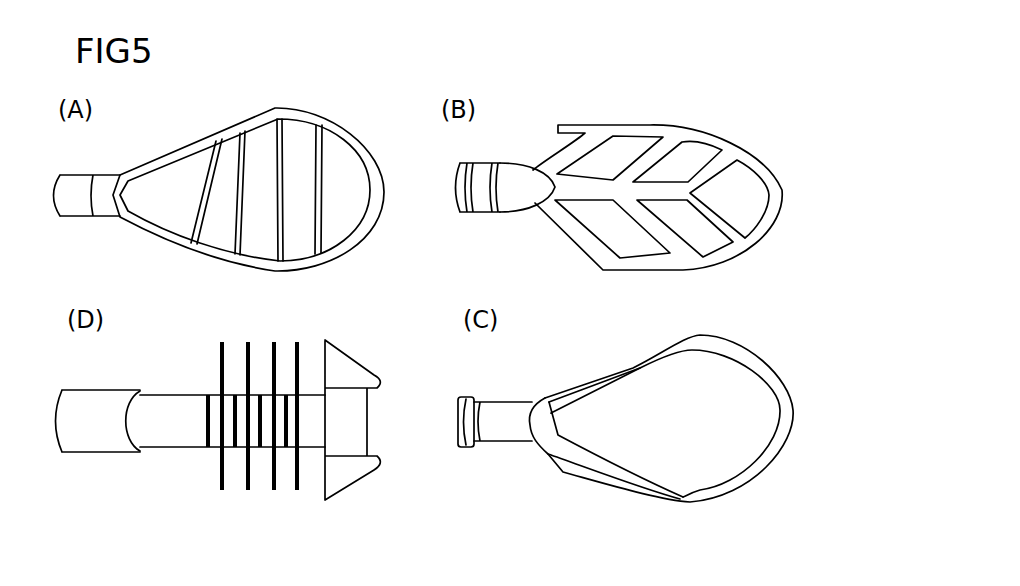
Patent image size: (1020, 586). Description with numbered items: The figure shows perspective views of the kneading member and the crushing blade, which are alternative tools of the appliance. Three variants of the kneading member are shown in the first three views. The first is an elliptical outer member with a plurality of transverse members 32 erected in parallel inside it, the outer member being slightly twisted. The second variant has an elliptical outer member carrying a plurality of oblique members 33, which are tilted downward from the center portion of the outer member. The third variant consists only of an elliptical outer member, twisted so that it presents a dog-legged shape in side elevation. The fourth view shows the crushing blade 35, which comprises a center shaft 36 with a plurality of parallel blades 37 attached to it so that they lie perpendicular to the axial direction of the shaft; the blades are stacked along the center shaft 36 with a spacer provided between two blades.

The transverse members 32 is at (243, 133).
The oblique members 33 is at (668, 148).
The crushing blade 35 is at (172, 438).
The center shaft 36 is at (174, 393).
The parallel blades 37 is at (222, 358).